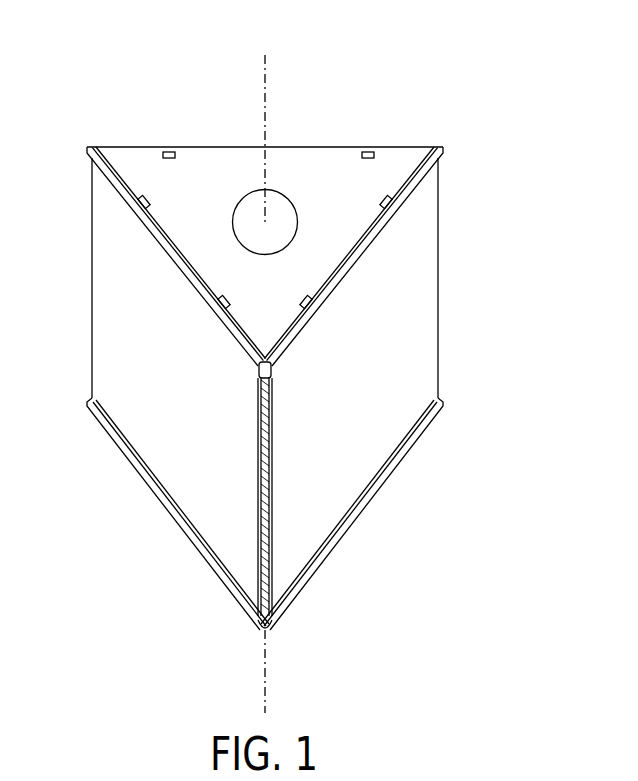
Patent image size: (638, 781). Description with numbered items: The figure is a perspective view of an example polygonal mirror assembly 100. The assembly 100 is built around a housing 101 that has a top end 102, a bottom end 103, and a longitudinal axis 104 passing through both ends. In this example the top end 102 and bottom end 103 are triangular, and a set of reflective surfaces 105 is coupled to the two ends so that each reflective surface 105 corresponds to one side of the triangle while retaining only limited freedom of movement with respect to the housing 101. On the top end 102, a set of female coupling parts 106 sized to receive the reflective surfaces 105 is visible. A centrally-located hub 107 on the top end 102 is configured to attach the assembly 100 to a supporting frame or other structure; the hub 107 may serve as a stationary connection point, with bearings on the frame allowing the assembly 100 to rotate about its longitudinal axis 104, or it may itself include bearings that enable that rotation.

The polygonal mirror assembly 100 is at (472, 77).
The housing 101 is at (200, 147).
The top end 102 is at (368, 147).
The bottom end 103 is at (365, 508).
The longitudinal axis 104 is at (268, 93).
The reflective surfaces 105 is at (100, 300).
The female coupling parts 106 is at (232, 300).
The hub 107 is at (296, 208).